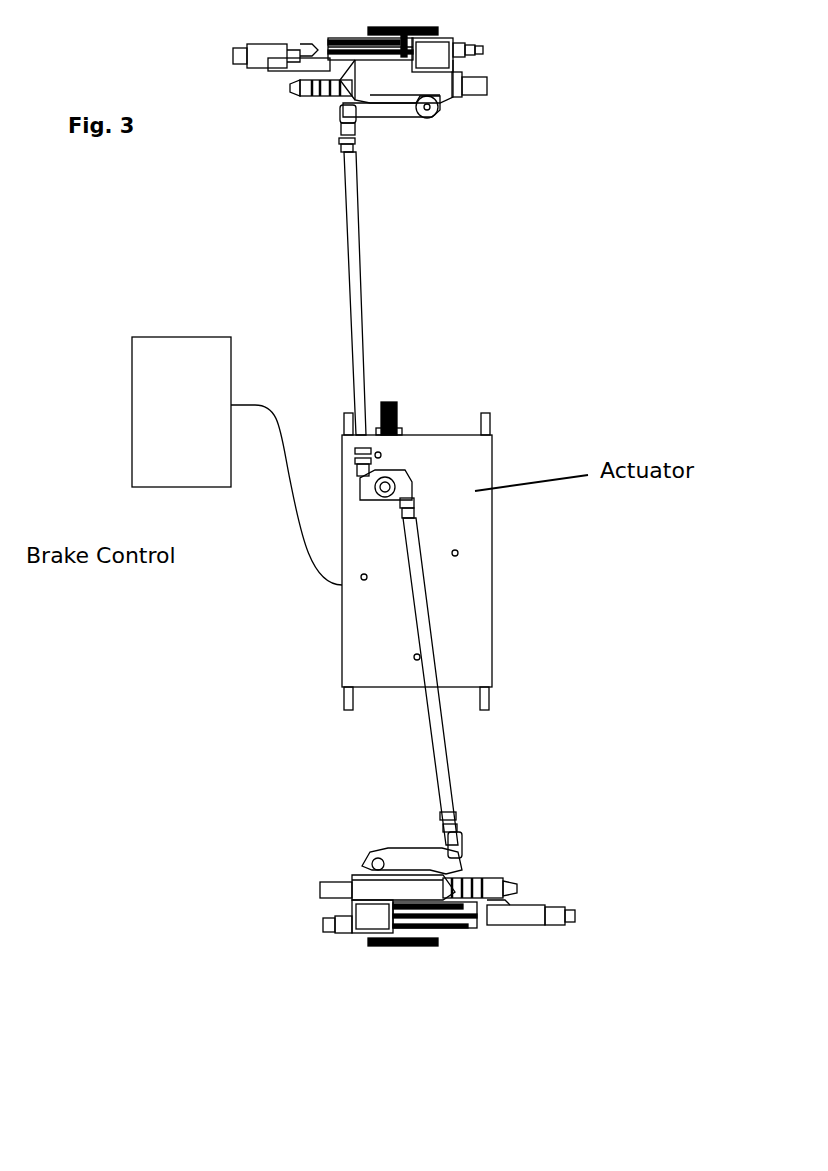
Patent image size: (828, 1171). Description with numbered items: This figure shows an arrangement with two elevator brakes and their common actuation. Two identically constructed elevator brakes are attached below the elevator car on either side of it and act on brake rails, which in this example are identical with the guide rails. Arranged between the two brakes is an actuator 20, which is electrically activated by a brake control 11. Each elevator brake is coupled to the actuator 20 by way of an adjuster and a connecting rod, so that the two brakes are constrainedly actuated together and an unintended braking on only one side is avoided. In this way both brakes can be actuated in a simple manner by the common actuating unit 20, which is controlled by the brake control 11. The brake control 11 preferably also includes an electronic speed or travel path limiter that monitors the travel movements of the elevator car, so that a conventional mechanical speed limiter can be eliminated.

The brake control 11 is at (127, 532).
The actuator 20 is at (458, 553).